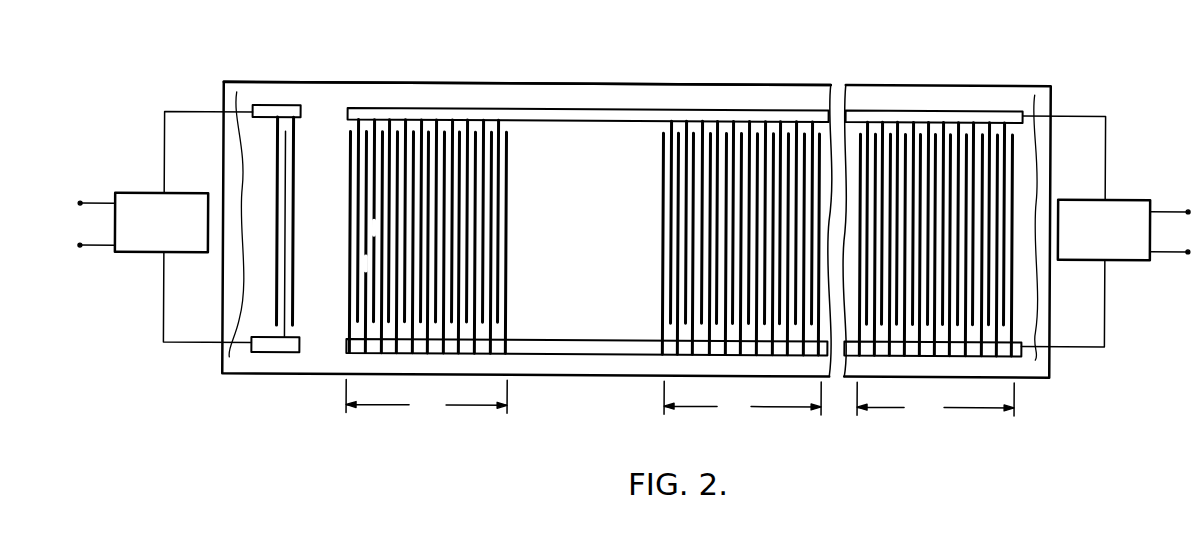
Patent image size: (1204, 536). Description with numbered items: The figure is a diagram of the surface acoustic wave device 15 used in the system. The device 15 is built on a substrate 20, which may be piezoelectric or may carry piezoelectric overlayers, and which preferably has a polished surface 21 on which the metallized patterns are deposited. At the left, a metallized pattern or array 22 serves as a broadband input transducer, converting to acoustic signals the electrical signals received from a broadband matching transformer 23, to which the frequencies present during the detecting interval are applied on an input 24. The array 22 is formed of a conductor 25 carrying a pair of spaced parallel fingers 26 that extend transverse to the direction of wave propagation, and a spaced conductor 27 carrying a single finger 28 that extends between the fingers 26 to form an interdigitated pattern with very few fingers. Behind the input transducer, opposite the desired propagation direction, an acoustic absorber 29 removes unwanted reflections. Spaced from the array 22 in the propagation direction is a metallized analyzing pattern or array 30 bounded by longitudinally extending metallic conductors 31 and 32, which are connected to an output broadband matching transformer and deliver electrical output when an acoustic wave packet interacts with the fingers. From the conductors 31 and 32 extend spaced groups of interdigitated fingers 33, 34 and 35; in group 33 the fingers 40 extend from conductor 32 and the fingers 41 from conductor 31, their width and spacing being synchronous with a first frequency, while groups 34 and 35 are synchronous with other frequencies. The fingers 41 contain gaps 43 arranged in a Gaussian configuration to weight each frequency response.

The surface acoustic wave device 15 is at (471, 42).
The substrate 20 is at (284, 84).
The polished surface 21 is at (323, 94).
The input transducer 22 is at (303, 210).
The broadband matching transformer 23 is at (153, 199).
The input 24 is at (636, 227).
The conductor 25 is at (300, 114).
The spaced parallel fingers 26 is at (284, 154).
The conductor 27 is at (298, 349).
The finger 28 is at (286, 246).
The acoustic absorber 29 is at (240, 150).
The analyzing pattern 30 is at (641, 366).
The longitudinally extending metallic conductor 31 is at (566, 112).
The longitudinally extending metallic conductor 32 is at (596, 350).
The group of interdigitated fingers 33 is at (344, 224).
The group of interdigitated fingers 34 is at (658, 198).
The group of interdigitated fingers 35 is at (857, 151).
The fingers 40 is at (350, 159).
The fingers 41 is at (358, 178).
The gaps 43 is at (350, 314).